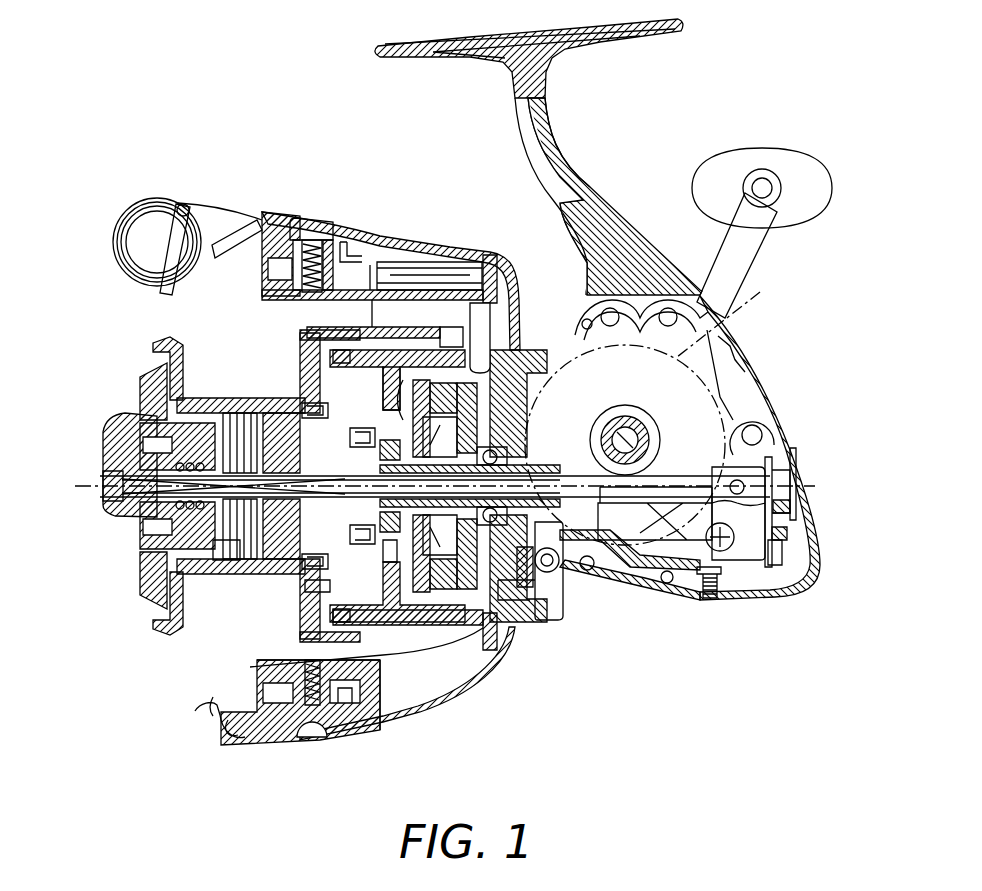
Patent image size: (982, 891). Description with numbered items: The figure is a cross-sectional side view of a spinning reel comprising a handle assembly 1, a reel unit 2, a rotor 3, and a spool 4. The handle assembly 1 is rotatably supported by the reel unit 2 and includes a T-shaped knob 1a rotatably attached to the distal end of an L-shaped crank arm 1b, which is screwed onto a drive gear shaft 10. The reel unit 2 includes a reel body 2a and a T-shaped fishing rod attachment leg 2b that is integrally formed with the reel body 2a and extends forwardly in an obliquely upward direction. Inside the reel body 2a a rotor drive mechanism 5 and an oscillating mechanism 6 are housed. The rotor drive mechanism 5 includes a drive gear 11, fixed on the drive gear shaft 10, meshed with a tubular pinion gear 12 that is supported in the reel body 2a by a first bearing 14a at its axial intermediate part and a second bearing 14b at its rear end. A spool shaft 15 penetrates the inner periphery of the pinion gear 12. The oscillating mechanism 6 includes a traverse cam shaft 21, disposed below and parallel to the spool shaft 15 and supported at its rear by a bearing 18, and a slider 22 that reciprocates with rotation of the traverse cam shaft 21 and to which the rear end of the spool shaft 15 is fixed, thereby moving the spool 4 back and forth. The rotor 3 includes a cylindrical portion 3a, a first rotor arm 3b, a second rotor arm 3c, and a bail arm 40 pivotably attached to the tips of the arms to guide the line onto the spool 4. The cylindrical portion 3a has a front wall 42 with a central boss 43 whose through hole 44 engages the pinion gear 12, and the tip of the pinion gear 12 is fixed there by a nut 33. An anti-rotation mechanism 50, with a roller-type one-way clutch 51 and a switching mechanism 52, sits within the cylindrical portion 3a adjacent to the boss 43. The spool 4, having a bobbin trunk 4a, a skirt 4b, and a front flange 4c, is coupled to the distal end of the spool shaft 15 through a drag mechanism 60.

The handle assembly 1 is at (744, 198).
The knob 1a is at (752, 160).
The crank arm 1b is at (720, 247).
The reel unit 2 is at (640, 190).
The reel body 2a is at (365, 456).
The fishing rod attachment leg 2b is at (560, 143).
The rotor 3 is at (357, 453).
The cylindrical portion 3a is at (375, 383).
The first rotor arm 3b is at (393, 277).
The second rotor arm 3c is at (407, 677).
The spool 4 is at (435, 464).
The bobbin trunk 4a is at (270, 405).
The skirt 4b is at (327, 287).
The front flange 4c is at (184, 370).
The rotor drive mechanism 5 is at (683, 402).
The oscillating mechanism 6 is at (655, 548).
The drive gear shaft 10 is at (627, 437).
The drive gear 11 is at (740, 296).
The pinion gear 12 is at (535, 557).
The first bearing 14a is at (503, 583).
The second bearing 14b is at (590, 553).
The spool shaft 15 is at (700, 594).
The bearing 18 is at (803, 575).
The traverse cam shaft 21 is at (630, 548).
The slider 22 is at (773, 593).
The nut 33 is at (307, 587).
The bail arm 40 is at (148, 292).
The front wall 42 is at (387, 373).
The boss 43 is at (383, 556).
The through hole 44 is at (300, 630).
The anti-rotation mechanism 50 is at (453, 598).
The one-way clutch 51 is at (488, 272).
The switching mechanism 52 is at (557, 625).
The drag mechanism 60 is at (227, 550).